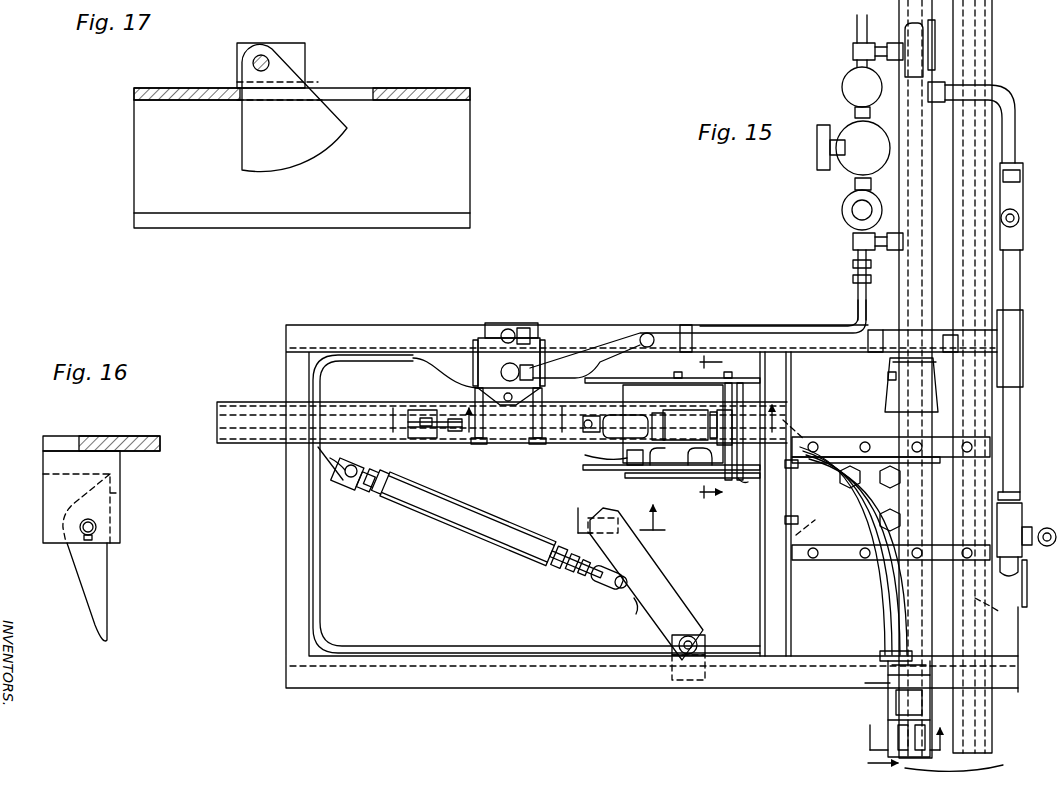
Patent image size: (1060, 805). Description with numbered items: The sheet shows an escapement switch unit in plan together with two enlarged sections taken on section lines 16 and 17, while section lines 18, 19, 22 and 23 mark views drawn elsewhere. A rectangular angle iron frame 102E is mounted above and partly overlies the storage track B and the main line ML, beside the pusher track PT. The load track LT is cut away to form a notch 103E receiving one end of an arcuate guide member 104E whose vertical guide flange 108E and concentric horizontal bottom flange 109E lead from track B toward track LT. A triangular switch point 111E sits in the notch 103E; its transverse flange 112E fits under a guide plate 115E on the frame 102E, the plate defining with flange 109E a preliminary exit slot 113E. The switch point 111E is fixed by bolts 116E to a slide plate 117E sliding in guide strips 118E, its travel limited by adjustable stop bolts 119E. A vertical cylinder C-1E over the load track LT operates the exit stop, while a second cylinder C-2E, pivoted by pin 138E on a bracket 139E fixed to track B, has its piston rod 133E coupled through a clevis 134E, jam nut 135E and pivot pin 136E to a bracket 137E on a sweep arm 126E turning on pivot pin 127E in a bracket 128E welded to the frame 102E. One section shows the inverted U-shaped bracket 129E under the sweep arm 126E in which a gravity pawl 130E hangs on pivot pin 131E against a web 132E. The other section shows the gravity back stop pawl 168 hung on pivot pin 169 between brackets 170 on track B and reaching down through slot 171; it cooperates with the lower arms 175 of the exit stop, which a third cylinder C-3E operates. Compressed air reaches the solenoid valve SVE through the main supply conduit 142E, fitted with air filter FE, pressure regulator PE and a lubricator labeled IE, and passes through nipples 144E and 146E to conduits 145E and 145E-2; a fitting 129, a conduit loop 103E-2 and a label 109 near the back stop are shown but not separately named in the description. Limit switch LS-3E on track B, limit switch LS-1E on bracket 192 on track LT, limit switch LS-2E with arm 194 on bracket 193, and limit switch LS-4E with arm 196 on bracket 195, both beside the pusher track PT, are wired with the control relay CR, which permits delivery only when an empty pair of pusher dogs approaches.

In FIG. 17, the pivot pin 169 is at (262, 55).
In FIG. 17, the brackets 170 is at (305, 52).
In FIG. 15, the brackets 170 is at (414, 440).
In FIG. 17, the gravity stop pawl 168 is at (303, 156).
In FIG. 15, the gravity stop pawl 168 is at (433, 418).
In FIG. 17, the storage track B is at (400, 88).
In FIG. 15, the storage track B is at (362, 402).
In FIG. 16, the sweep arm 126E is at (142, 436).
In FIG. 15, the sweep arm 126E is at (660, 578).
In FIG. 16, the bracket 129E is at (43, 466).
In FIG. 15, the bracket 129E is at (612, 518).
In FIG. 16, the stop element or web 132E is at (120, 493).
In FIG. 16, the pivot pin 131E is at (96, 528).
In FIG. 16, the gravity operated pawl 130E is at (100, 612).
In FIG. 15, the limit switch LS-1E is at (908, 32).
In FIG. 15, the bracket 192 is at (935, 45).
In FIG. 15, the air filter FE is at (842, 87).
In FIG. 15, the pressure regulator PE is at (840, 130).
In FIG. 15, the load track LT is at (855, 184).
In FIG. 15, the indicator gauge IE is at (843, 211).
In FIG. 15, the main air supply conduit 142E is at (858, 297).
In FIG. 15, the limit switch LS-2E is at (1022, 162).
In FIG. 15, the bracket 193 is at (1024, 181).
In FIG. 15, the operating arm 194 is at (1022, 216).
In FIG. 15, the solenoid operated valve SVE is at (496, 336).
In FIG. 15, the fourth conduit 145E-2 is at (568, 368).
In FIG. 15, the lower members of arms 175 is at (726, 380).
In FIG. 15, the nipple 144E is at (456, 382).
In FIG. 15, the clamp 109 is at (422, 410).
In FIG. 15, the limit switch LS-3E is at (608, 420).
In FIG. 15, the section line 19 is at (703, 428).
In FIG. 15, the elbow fitting 129 is at (630, 418).
In FIG. 15, the double acting pneumatic cylinder C-3E is at (676, 418).
In FIG. 15, the nipple 146E is at (542, 420).
In FIG. 15, the section line 17 is at (428, 440).
In FIG. 15, the section line 18 is at (666, 449).
In FIG. 15, the lengthwise slot 171 is at (453, 426).
In FIG. 15, the bracket 139E is at (318, 466).
In FIG. 15, the pivot pin 138E is at (346, 484).
In FIG. 15, the double acting pneumatic cylinder C-2E is at (457, 518).
In FIG. 15, the pipe loop 103E-2 is at (313, 585).
In FIG. 15, the rectangular angle iron frame 102E is at (540, 672).
In FIG. 15, the third conduit 145E is at (650, 470).
In FIG. 15, the section line 16 is at (621, 525).
In FIG. 15, the preliminary exit slot 113E is at (742, 478).
In FIG. 15, the slide plate 117E is at (785, 519).
In FIG. 15, the adjustable stop bolts 119E is at (784, 522).
In FIG. 15, the switch point 111E is at (796, 535).
In FIG. 15, the pivot pin 127E is at (700, 637).
In FIG. 15, the bracket 128E is at (705, 645).
In FIG. 15, the piston rod 133E is at (560, 575).
In FIG. 15, the jam nut 135E is at (578, 585).
In FIG. 15, the pivot pin 136E is at (623, 592).
In FIG. 15, the clevis 134E is at (600, 598).
In FIG. 15, the bracket 137E is at (637, 616).
In FIG. 15, the guide plate 115E is at (783, 420).
In FIG. 15, the control relay CR is at (885, 376).
In FIG. 15, the transverse flange 112E is at (880, 406).
In FIG. 15, the bolts 116E is at (894, 518).
In FIG. 15, the limit switch LS-4E is at (1035, 525).
In FIG. 15, the bracket 195 is at (1005, 600).
In FIG. 15, the operating arm 196 is at (1000, 612).
In FIG. 15, the guide strips 118E is at (830, 560).
In FIG. 15, the vertical guide flange 108E is at (884, 601).
In FIG. 15, the arcuate guide member 104E is at (880, 612).
In FIG. 15, the horizontal bottom flange 109E is at (897, 632).
In FIG. 15, the lengthwise opening or notch 103E is at (887, 658).
In FIG. 15, the section line 22 is at (864, 724).
In FIG. 15, the double acting pneumatic cylinder C-1E is at (895, 717).
In FIG. 15, the section line 23 is at (923, 739).
In FIG. 15, the pusher track PT is at (985, 732).
In FIG. 15, the main line ML is at (1003, 765).